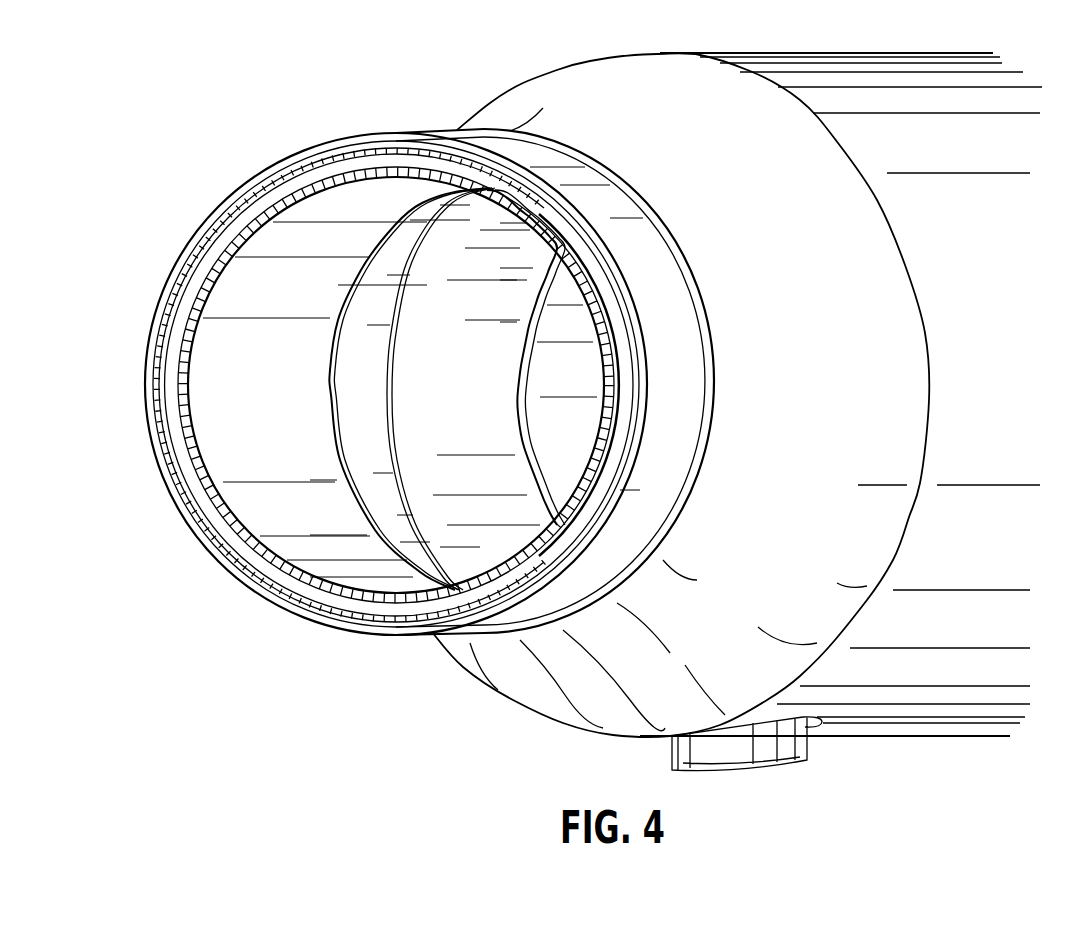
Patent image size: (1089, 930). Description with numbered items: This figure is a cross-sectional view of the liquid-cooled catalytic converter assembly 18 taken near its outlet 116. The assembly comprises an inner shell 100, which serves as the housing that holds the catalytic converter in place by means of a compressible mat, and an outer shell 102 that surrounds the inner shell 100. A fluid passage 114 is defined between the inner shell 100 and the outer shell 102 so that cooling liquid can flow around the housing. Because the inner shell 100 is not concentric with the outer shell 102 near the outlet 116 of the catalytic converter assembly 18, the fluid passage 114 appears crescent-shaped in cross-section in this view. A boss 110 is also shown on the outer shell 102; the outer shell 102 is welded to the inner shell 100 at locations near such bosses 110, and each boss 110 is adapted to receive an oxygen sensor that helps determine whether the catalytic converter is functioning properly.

The liquid-cooled catalytic converter assembly 18 is at (487, 86).
The outlet 116 is at (187, 221).
The outer shell 102 is at (175, 285).
The fluid passage 114 is at (164, 388).
The inner shell 100 is at (243, 381).
The boss 110 is at (741, 764).